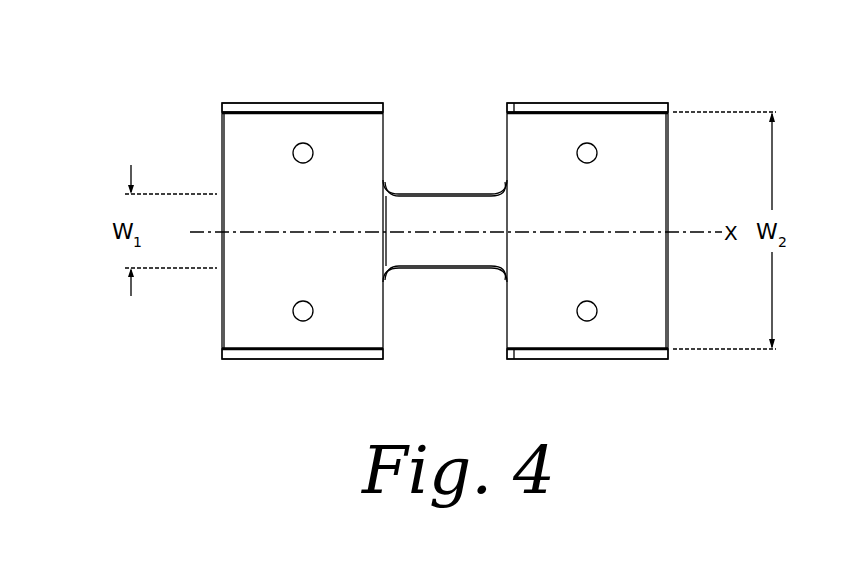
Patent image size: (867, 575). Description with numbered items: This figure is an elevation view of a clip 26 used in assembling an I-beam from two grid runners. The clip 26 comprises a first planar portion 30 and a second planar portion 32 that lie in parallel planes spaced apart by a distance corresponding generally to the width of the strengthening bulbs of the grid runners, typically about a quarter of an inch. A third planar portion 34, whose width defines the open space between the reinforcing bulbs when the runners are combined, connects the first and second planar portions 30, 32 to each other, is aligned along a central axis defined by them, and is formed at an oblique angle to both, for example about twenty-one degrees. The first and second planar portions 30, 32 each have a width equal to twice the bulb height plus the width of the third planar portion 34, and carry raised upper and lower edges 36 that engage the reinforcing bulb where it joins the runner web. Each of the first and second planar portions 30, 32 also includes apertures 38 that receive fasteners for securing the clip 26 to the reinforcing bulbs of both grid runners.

The clip 26 is at (369, 86).
The first planar portion 30 is at (315, 207).
The second planar portion 32 is at (599, 207).
The third planar portion 34 is at (436, 258).
The raised upper and lower edges 36 is at (384, 103).
The apertures 38 is at (300, 143).